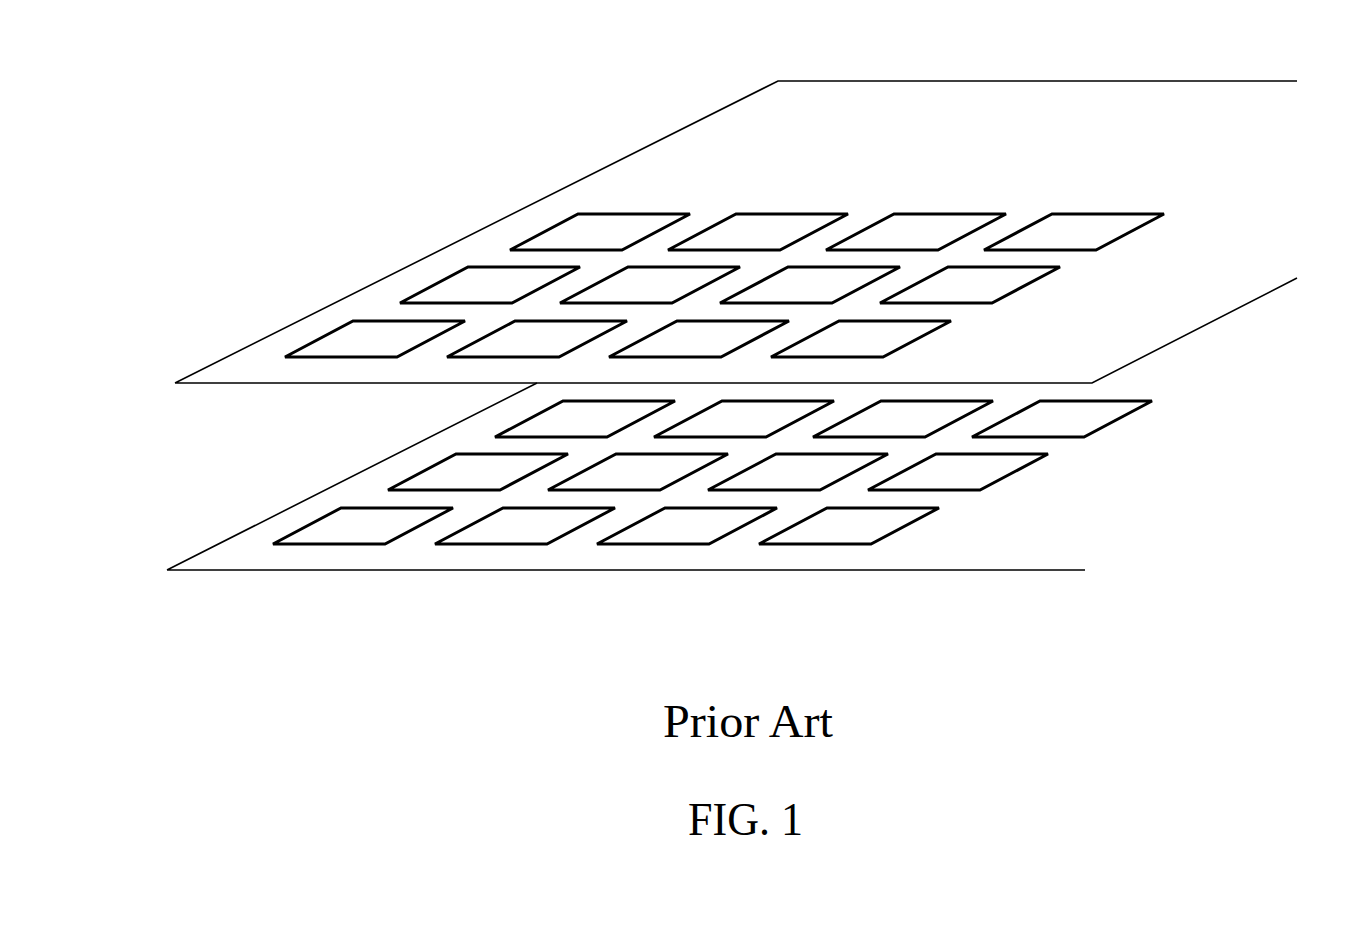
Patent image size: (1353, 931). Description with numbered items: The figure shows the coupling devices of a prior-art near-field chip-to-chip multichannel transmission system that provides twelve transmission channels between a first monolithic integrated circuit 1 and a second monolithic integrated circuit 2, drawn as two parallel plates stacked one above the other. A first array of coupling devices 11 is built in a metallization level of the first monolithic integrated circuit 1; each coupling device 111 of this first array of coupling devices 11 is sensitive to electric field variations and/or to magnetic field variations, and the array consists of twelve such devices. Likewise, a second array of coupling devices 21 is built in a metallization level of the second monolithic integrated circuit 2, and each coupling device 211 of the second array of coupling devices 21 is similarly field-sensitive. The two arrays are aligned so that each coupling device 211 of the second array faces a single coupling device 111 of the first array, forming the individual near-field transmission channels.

The first monolithic integrated circuit 1 is at (185, 338).
The first array of coupling devices 11 is at (835, 166).
The coupling device 111 is at (1133, 242).
The second monolithic integrated circuit 2 is at (180, 535).
The second array of coupling devices 21 is at (1235, 401).
The coupling device 211 is at (1113, 427).